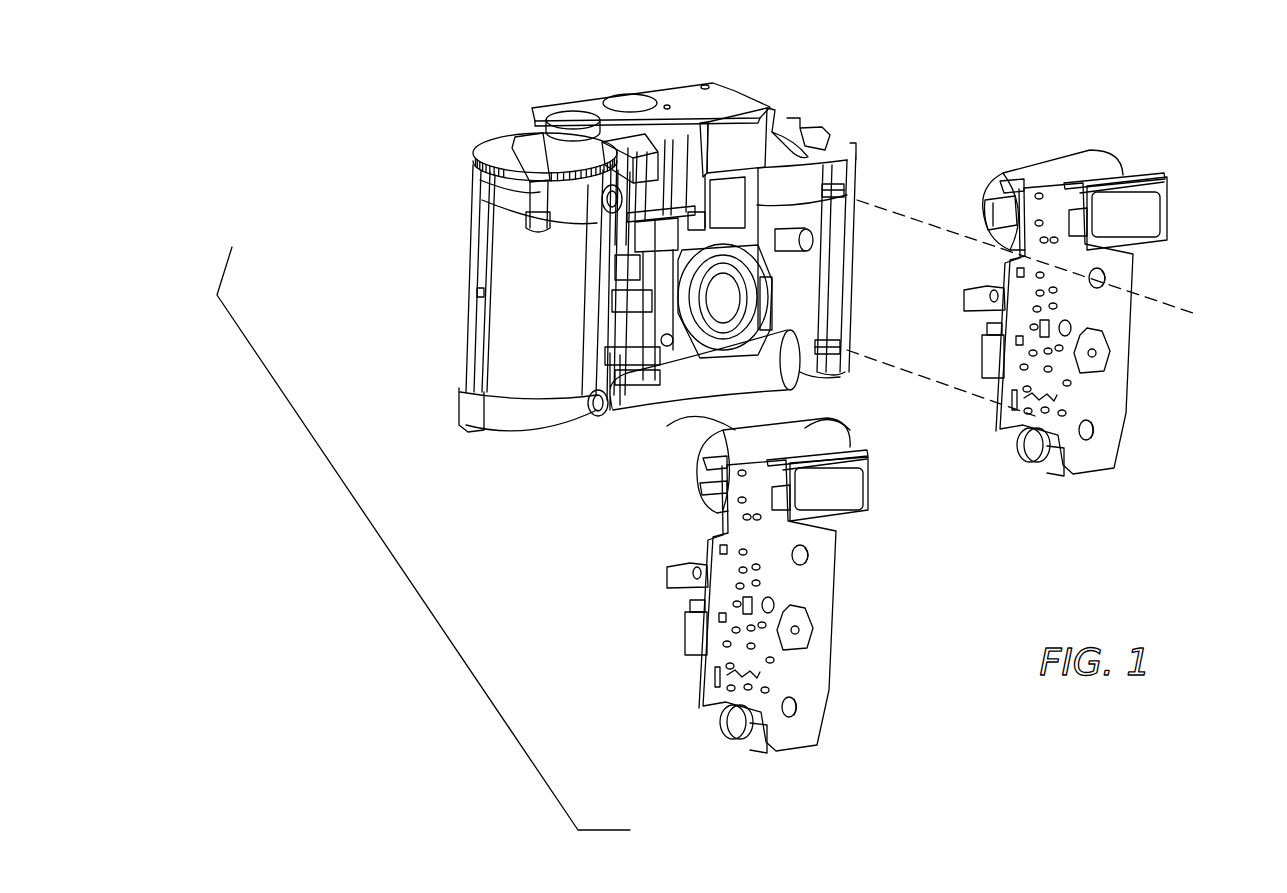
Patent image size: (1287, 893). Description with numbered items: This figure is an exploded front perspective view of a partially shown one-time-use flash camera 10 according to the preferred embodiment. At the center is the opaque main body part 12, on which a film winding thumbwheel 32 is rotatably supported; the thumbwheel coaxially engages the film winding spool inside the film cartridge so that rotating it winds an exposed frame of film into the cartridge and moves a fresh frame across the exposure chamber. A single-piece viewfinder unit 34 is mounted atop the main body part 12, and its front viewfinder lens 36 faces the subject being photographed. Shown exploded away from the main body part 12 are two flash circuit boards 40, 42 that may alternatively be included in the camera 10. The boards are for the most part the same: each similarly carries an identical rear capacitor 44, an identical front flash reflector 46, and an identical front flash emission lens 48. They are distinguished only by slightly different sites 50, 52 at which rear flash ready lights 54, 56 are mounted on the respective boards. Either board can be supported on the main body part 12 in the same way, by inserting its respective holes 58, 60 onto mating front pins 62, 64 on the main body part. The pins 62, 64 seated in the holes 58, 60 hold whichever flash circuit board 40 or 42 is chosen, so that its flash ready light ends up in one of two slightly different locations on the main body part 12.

The one-time-use flash camera 10 is at (512, 492).
The main body part 12 is at (453, 332).
The film winding thumbwheel 32 is at (502, 138).
The viewfinder unit 34 is at (672, 86).
The front viewfinder lens 36 is at (783, 117).
The flash circuit board 40 is at (843, 623).
The flash circuit board 42 is at (1144, 376).
The rear capacitor 44 is at (740, 432).
The front flash reflector 46 is at (857, 449).
The front flash emission lens 48 is at (857, 480).
The site 50 is at (743, 520).
The site 52 is at (1045, 172).
The rear flash ready light 54 is at (700, 500).
The rear flash ready light 56 is at (993, 210).
The hole 58 is at (805, 556).
The hole 60 is at (797, 707).
The front pin 62 is at (852, 229).
The front pin 64 is at (840, 333).